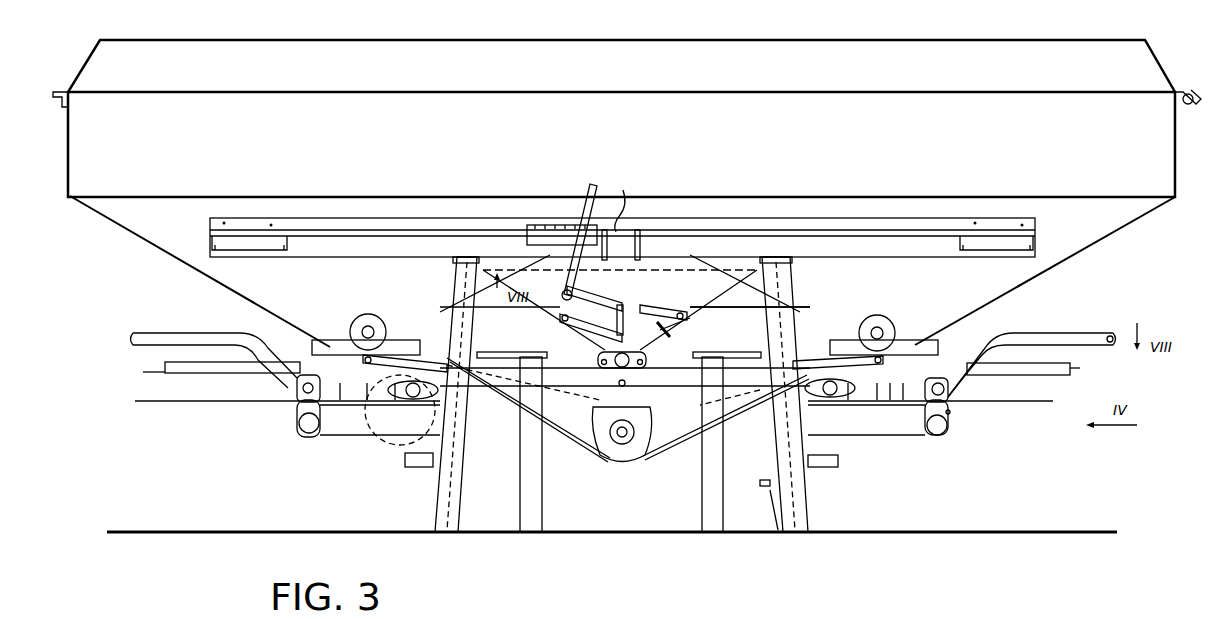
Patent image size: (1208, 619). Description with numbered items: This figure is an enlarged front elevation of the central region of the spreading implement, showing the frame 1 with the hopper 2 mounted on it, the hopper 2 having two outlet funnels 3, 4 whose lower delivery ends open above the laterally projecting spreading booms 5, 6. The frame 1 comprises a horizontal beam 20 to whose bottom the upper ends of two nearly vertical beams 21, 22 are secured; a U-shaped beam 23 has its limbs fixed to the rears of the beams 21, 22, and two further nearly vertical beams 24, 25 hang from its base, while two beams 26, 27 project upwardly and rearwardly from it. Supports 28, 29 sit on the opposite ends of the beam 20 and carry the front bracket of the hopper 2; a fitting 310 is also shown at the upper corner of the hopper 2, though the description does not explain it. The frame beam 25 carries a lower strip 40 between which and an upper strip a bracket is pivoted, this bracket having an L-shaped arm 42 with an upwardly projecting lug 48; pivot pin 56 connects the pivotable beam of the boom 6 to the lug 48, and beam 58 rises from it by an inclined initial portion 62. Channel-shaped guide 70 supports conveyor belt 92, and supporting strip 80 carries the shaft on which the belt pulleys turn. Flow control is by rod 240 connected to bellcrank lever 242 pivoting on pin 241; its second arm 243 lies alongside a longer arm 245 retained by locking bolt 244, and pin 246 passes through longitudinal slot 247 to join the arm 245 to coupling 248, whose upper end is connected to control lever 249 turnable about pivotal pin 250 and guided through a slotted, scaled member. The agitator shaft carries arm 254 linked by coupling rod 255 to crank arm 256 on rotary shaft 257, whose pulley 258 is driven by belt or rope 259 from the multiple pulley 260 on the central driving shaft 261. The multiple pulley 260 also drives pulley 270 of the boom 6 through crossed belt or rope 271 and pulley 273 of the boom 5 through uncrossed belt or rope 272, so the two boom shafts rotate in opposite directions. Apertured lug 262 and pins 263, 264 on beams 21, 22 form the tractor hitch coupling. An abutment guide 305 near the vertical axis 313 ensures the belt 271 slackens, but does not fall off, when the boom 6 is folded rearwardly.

The frame 1 is at (433, 493).
The hopper 2 is at (546, 38).
The outlet funnel 3 is at (222, 278).
The outlet funnel 4 is at (1067, 258).
The spreading boom 5 is at (143, 328).
The spreading boom 6 is at (1037, 328).
The horizontal beam 20 is at (326, 250).
The beam 21 is at (442, 512).
The beam 22 is at (800, 519).
The U-shaped beam 23 is at (456, 307).
The beam 24 is at (520, 502).
The beam 25 is at (700, 508).
The beam 26 is at (452, 268).
The beam 27 is at (797, 262).
The support 28 is at (210, 243).
The support 29 is at (1042, 247).
The lower strip 40 is at (766, 487).
The arm 42 is at (913, 433).
The lug 48 is at (950, 440).
The pivot pin 56 is at (947, 413).
The beam 58 is at (1097, 337).
The initial portion 62 is at (985, 360).
The channel-shaped guide 70 is at (1037, 373).
The supporting strip 80 is at (848, 410).
The conveyor belt 92 is at (1070, 372).
The rod 240 is at (790, 310).
The pivot pin 241 is at (703, 311).
The bellcrank lever 242 is at (701, 326).
The second arm 243 is at (689, 297).
The locking bolt 244 is at (470, 332).
The longer arm 245 is at (652, 243).
The pin 246 is at (621, 313).
The longitudinal slot 247 is at (594, 287).
The coupling 248 is at (642, 299).
The control lever 249 is at (593, 185).
The pivotal pin 250 is at (547, 297).
The arm 254 is at (882, 347).
The coupling rod 255 is at (858, 340).
The crank arm 256 is at (726, 422).
The rotary shaft 257 is at (650, 380).
The pulley 258 is at (523, 394).
The endless belt or rope 259 is at (528, 408).
The multiple pulley 260 is at (602, 457).
The driving shaft 261 is at (622, 447).
The apertured lug 262 is at (628, 201).
The pin 263 is at (420, 462).
The pin 264 is at (822, 467).
The drive pulley 270 is at (890, 407).
The endless belt or rope 271 is at (695, 435).
The endless belt or rope 272 is at (512, 390).
The pulley 273 is at (397, 410).
The abutment guide 305 is at (761, 396).
The hook 310 is at (1185, 112).
The vertical axis 313 is at (764, 492).